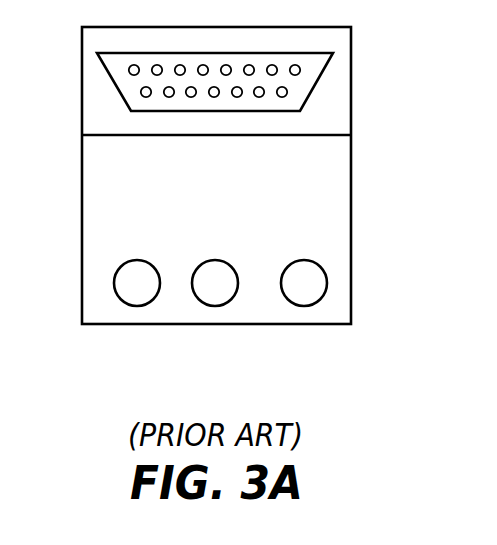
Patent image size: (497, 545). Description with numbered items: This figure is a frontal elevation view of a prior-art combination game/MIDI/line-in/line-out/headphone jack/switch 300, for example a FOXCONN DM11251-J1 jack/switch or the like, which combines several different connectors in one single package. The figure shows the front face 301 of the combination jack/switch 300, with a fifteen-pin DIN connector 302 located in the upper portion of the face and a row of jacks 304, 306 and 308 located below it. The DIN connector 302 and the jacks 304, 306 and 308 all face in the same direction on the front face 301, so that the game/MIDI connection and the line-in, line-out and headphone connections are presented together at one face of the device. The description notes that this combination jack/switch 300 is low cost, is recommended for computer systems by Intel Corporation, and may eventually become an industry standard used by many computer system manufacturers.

The combination jack/switch 300 is at (351, 40).
The front face 301 is at (234, 196).
The 15-pin DIN connector 302 is at (111, 78).
The jack 304 is at (140, 306).
The jack 306 is at (218, 306).
The jack 308 is at (306, 306).